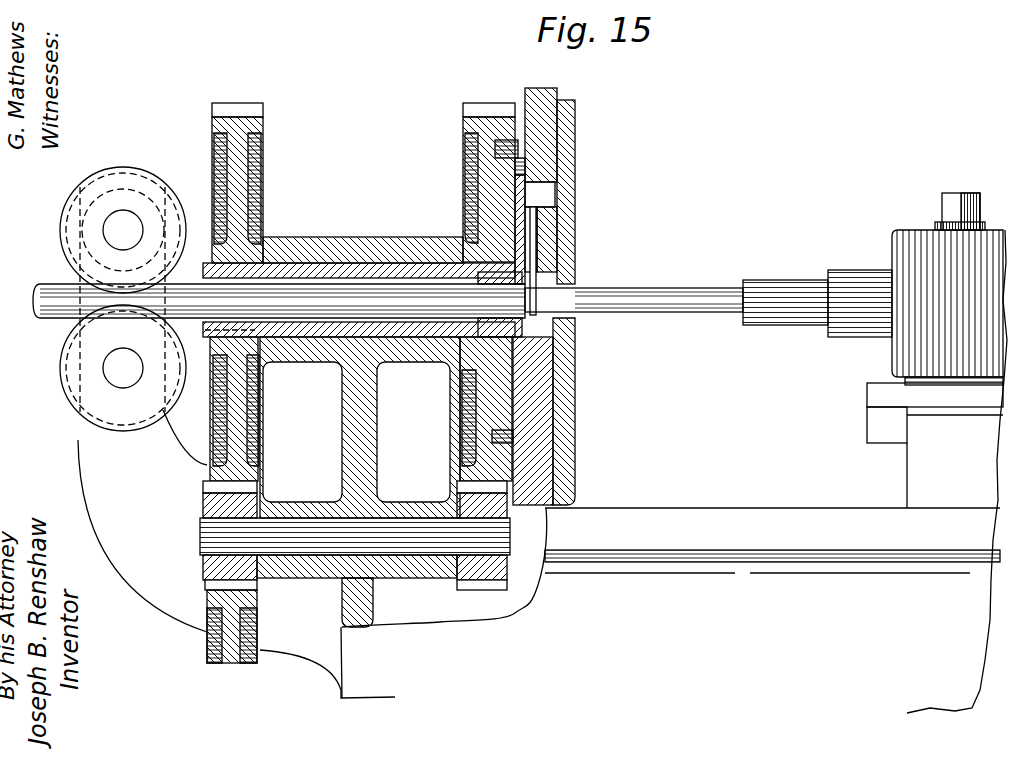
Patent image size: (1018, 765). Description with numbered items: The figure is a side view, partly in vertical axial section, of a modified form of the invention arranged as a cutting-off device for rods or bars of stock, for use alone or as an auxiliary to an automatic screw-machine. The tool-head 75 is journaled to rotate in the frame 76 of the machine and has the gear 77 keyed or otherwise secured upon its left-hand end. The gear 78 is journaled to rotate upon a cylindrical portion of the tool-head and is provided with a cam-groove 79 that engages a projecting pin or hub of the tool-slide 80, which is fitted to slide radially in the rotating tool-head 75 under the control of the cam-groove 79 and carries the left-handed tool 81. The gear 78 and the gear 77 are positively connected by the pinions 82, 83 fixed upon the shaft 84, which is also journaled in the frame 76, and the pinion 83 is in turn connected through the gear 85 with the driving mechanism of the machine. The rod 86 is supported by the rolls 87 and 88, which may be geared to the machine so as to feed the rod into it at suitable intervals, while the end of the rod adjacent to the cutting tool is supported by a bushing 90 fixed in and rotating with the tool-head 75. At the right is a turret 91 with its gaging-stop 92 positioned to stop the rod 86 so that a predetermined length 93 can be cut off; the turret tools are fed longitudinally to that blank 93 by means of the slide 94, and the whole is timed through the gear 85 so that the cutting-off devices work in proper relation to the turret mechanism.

The tool-head 75 is at (535, 400).
The frame 76 is at (358, 434).
The gear 77 is at (238, 208).
The gear 78 is at (492, 203).
The cam-groove 79 is at (513, 440).
The tool-slide 80 is at (538, 88).
The tool 81 is at (548, 284).
The pinion 82 is at (490, 573).
The pinion 83 is at (216, 511).
The shaft 84 is at (298, 545).
The gear 85 is at (226, 653).
The rod 86 is at (54, 287).
The roll 87 is at (123, 289).
The roll 88 is at (133, 468).
The bushing 90 is at (568, 356).
The turret 91 is at (910, 253).
The gaging-stop 92 is at (789, 280).
The length 93 is at (657, 288).
The slide 94 is at (872, 414).